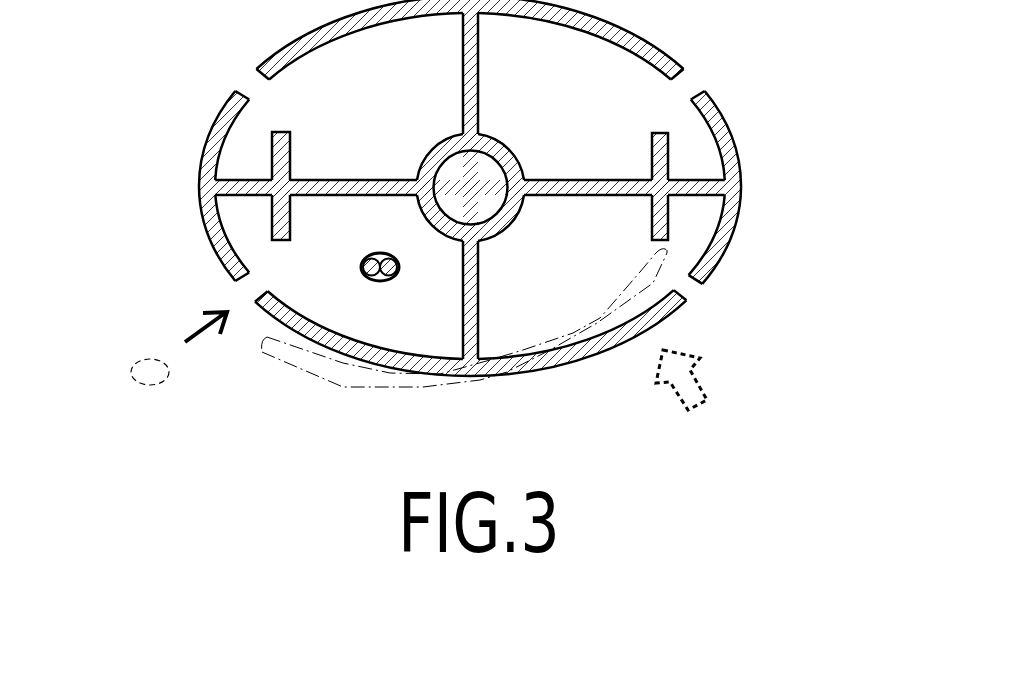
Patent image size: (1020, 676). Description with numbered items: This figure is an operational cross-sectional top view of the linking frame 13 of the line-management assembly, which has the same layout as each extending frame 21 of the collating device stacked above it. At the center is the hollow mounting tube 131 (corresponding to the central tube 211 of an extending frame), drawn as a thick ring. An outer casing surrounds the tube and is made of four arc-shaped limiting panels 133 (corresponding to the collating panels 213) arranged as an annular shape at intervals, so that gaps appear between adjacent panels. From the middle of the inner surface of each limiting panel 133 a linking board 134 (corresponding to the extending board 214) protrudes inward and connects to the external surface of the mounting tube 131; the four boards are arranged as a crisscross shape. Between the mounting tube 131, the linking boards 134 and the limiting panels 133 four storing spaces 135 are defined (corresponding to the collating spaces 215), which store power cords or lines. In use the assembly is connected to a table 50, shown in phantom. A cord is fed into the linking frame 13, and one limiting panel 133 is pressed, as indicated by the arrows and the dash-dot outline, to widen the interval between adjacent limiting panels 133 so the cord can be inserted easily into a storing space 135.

The linking frame 13 is at (474, 188).
The extending frame 21 is at (763, 101).
The mounting tube 131 is at (534, 161).
The central tube 211 is at (480, 150).
The limiting panel 133 is at (143, 186).
The collating panel 213 is at (217, 131).
The linking board 134 is at (550, 186).
The extending board 214 is at (476, 269).
The storing space 135 is at (370, 99).
The collating space 215 is at (428, 118).
The table 50 is at (377, 290).